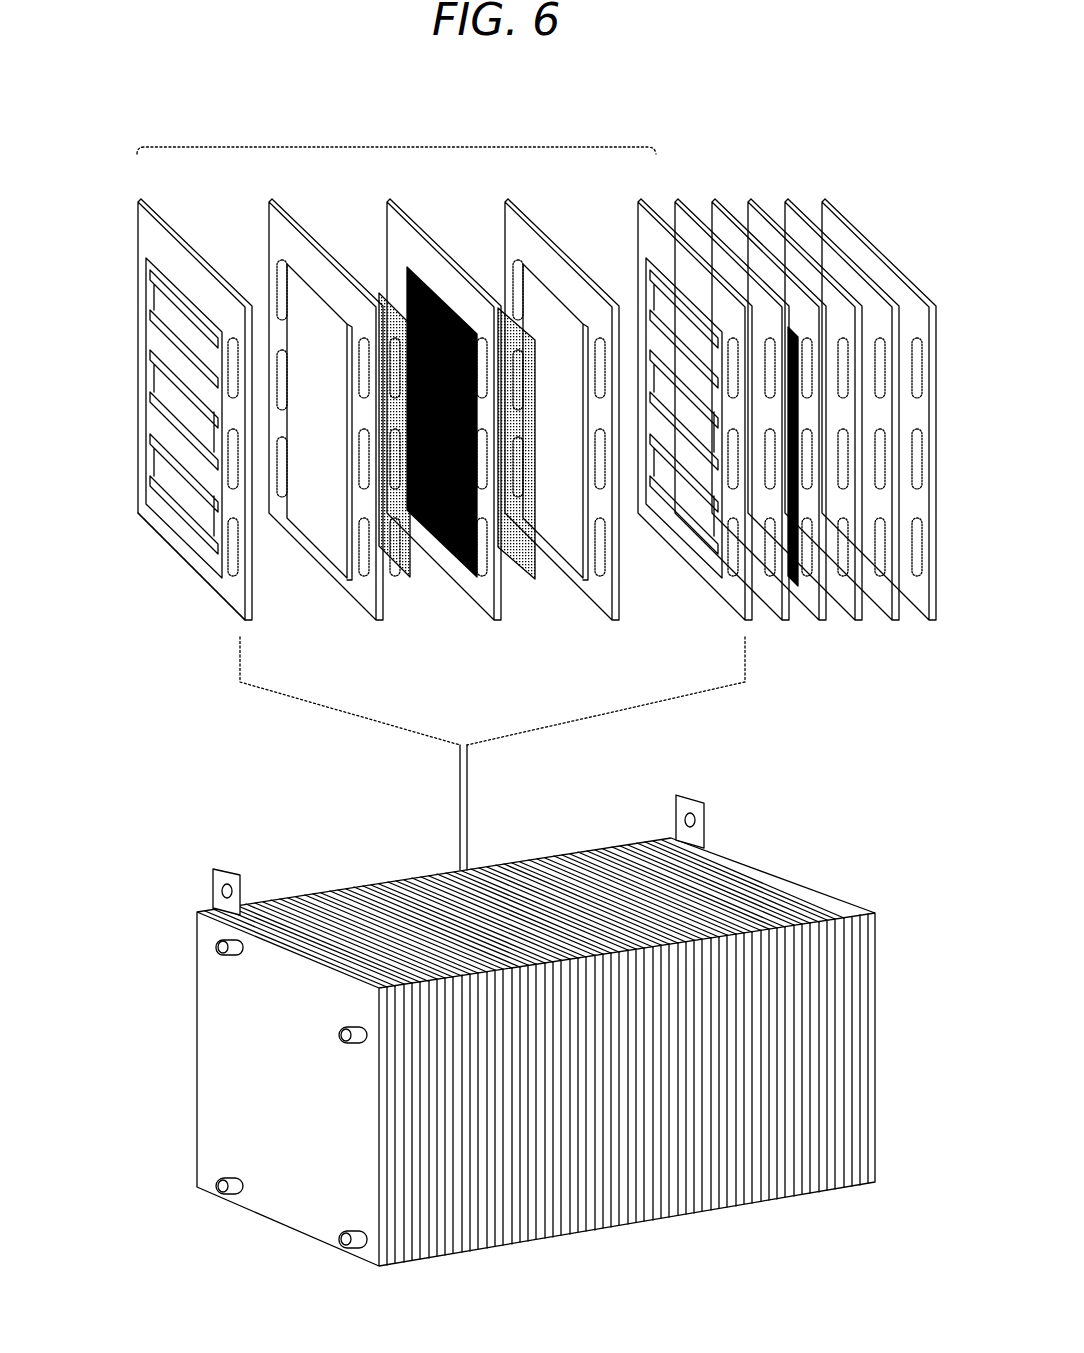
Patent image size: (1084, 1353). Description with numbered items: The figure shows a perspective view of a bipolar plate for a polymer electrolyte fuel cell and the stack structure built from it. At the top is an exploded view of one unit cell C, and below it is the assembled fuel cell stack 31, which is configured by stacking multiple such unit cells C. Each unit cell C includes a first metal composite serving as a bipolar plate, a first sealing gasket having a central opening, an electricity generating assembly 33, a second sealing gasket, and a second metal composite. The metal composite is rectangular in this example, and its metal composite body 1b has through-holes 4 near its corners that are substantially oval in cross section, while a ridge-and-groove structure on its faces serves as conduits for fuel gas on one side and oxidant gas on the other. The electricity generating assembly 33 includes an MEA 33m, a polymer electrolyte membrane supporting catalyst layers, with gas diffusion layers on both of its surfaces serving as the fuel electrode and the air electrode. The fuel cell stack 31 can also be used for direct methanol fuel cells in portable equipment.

The metal composite body 1b is at (191, 585).
The through-hole 4 is at (157, 418).
The electricity generating assembly 33 is at (420, 427).
The MEA 33m is at (442, 580).
The fuel cell stack 31 is at (660, 1250).
The unit cell C is at (396, 129).